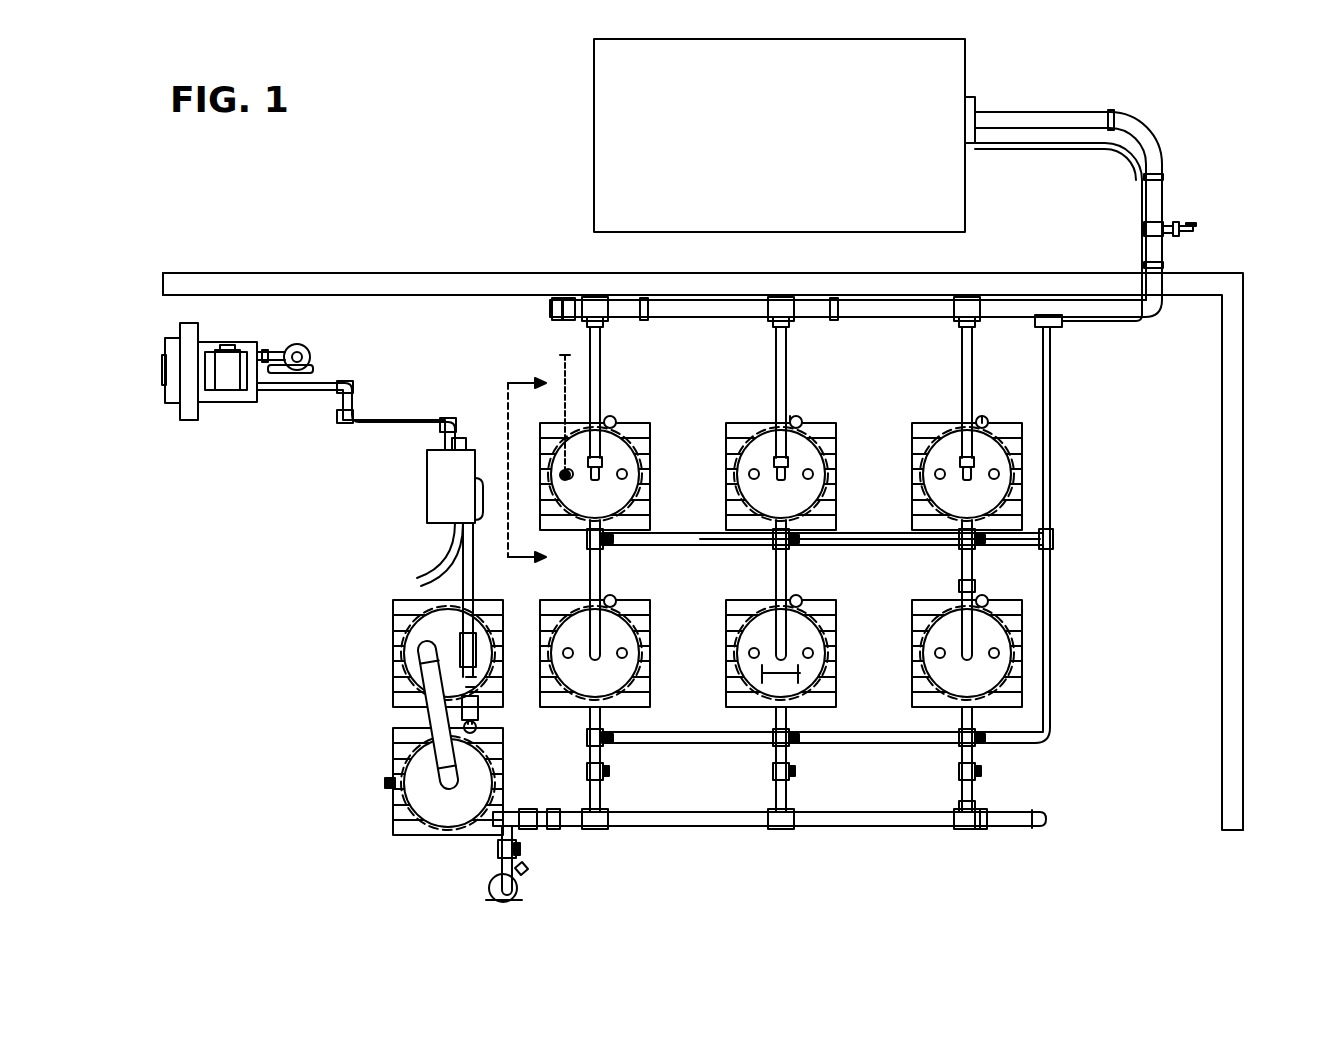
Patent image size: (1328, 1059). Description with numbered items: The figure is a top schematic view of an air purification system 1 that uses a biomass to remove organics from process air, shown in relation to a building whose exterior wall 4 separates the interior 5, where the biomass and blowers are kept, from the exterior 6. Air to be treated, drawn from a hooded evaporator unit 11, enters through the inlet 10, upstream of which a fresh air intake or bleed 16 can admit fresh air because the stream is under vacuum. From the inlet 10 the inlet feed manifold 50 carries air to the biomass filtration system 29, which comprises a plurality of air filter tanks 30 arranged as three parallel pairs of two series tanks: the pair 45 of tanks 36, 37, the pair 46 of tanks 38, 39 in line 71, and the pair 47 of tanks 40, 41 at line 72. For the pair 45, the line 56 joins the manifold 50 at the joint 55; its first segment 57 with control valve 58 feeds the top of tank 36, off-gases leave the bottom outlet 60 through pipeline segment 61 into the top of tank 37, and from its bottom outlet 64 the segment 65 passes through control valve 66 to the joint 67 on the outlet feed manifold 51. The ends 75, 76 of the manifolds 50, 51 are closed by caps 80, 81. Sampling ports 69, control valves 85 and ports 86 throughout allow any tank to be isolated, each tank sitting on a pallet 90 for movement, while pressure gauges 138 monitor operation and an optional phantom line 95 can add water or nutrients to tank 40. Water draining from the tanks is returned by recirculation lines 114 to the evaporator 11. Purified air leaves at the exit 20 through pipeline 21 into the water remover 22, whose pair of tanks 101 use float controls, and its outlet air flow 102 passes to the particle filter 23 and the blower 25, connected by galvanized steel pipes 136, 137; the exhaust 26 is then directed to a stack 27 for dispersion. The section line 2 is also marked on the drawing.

The air purification system 1 is at (1124, 800).
The section line 2 is at (527, 470).
The exterior wall 4 is at (385, 271).
The interior 5 is at (1224, 400).
The exterior 6 is at (280, 272).
The inlet 10 is at (1158, 300).
The hooded evaporator unit 11 is at (968, 50).
The fresh air intake or bleed 16 is at (1180, 224).
The air flow exit 20 is at (580, 830).
The pipeline 21 is at (530, 810).
The water remover 22 is at (368, 765).
The filter 23 is at (427, 474).
The blower 25 is at (222, 404).
The exit or exhaust 26 is at (280, 350).
The stack 27 is at (314, 352).
The biomass filtration system 29 is at (1088, 503).
The air filter tanks 30 is at (740, 480).
The tank 36 is at (1020, 440).
The tank 37 is at (1020, 630).
The tank 38 is at (830, 440).
The tank 39 is at (830, 630).
The tank 40 is at (640, 440).
The tank 41 is at (648, 666).
The pair of tanks 45 is at (985, 600).
The pair of tanks 46 is at (812, 595).
The pair of tanks 47 is at (628, 548).
The inlet feed manifold 50 is at (845, 318).
The outlet feed manifold 51 is at (852, 830).
The joint 55 is at (955, 320).
The line 56 is at (976, 362).
The first segment 57 is at (976, 388).
The control valve 58 is at (967, 478).
The bottom outlet 60 is at (958, 545).
The pipeline segment 61 is at (958, 578).
The bottom outlet 64 is at (950, 706).
The segment 65 is at (978, 752).
The control valve 66 is at (985, 776).
The joint 67 is at (956, 806).
The sampling ports 69 is at (984, 546).
The line 71 is at (776, 362).
The line 72 is at (602, 362).
The end 75 is at (560, 320).
The end 76 is at (1010, 830).
The cap 80 is at (552, 298).
The cap 81 is at (1046, 815).
The control valves 85 is at (606, 462).
The ports 86 is at (782, 546).
The pallet 90 is at (625, 425).
The optional line 95 is at (548, 364).
The tanks 101 is at (395, 640).
The outlet air flow 102 is at (500, 650).
The recirculation lines 114 is at (1040, 150).
The pipe 136 is at (297, 392).
The pipe 137 is at (312, 369).
The pressure gauges 138 is at (795, 416).